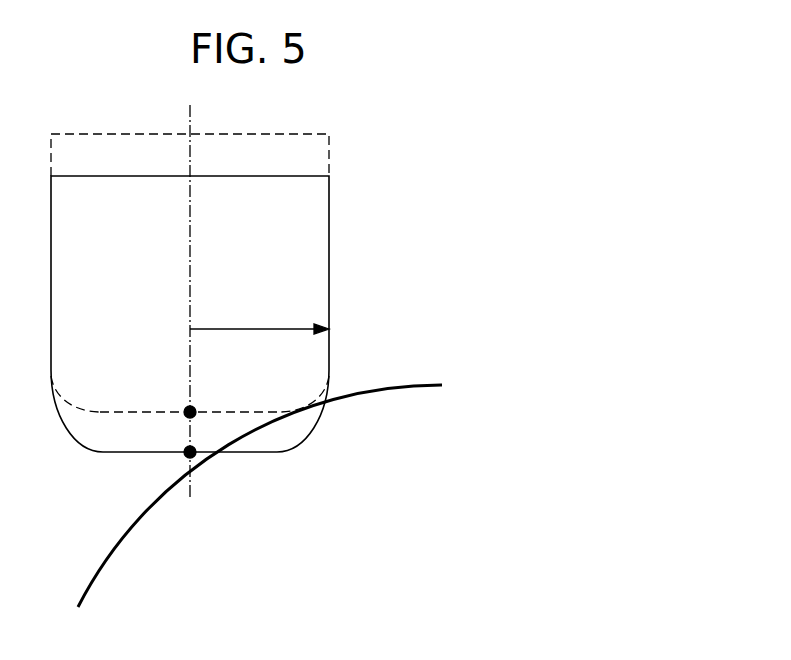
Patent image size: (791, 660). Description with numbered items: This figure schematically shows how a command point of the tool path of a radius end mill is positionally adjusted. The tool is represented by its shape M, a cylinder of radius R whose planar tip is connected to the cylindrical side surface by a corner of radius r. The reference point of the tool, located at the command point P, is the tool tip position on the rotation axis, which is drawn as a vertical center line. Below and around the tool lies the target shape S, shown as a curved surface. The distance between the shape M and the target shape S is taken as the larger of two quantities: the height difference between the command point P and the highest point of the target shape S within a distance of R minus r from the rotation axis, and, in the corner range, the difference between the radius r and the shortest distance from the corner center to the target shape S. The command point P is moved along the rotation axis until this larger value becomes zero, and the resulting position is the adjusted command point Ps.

The shape of the tool M is at (329, 160).
The radius of the cylindrical shape R is at (259, 320).
The radius at the corner r is at (67, 439).
The adjusted command point Ps is at (188, 406).
The command point P is at (193, 447).
The target shape S is at (120, 547).